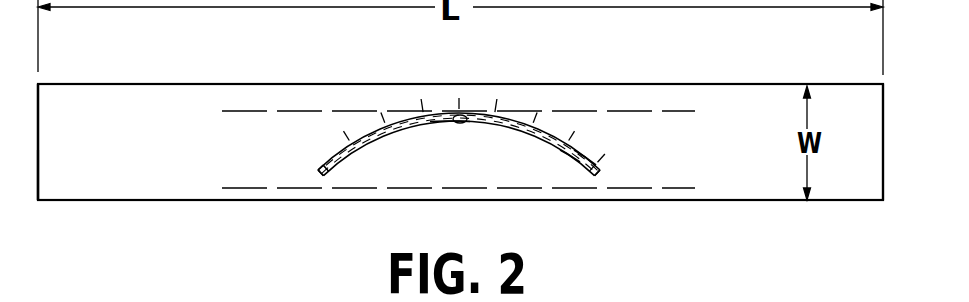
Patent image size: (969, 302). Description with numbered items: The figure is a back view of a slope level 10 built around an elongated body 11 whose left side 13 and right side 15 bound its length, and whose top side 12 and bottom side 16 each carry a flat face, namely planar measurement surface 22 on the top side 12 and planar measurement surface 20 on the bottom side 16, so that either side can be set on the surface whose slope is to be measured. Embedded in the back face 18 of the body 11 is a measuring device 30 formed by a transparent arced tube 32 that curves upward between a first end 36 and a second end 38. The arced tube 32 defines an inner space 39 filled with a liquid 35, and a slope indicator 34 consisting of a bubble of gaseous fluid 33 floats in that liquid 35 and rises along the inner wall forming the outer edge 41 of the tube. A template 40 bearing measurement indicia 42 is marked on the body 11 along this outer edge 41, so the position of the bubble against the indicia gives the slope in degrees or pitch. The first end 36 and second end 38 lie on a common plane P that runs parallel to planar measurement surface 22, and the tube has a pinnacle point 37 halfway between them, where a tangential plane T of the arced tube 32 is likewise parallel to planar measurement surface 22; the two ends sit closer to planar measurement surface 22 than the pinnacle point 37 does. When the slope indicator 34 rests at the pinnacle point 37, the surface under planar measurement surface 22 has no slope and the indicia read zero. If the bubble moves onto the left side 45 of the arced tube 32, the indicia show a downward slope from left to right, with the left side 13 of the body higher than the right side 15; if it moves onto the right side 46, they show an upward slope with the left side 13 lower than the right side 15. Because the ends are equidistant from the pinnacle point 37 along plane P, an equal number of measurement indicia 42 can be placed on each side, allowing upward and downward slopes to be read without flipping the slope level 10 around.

The slope level 10 is at (28, 165).
The body 11 is at (857, 97).
The top side 12 is at (785, 201).
The left side 13 is at (38, 123).
The right side 15 is at (883, 165).
The bottom side 16 is at (683, 85).
The back face 18 is at (60, 168).
The planar measurement surface 20 is at (182, 85).
The planar measurement surface 22 is at (152, 202).
The measuring device 30 is at (347, 172).
The transparent arced tube 32 is at (557, 142).
The bubble of gaseous fluid 33 is at (447, 122).
The slope indicator 34 is at (455, 123).
The liquid 35 is at (576, 155).
The first end 36 is at (322, 183).
The pinnacle point 37 is at (462, 116).
The second end 38 is at (596, 190).
The inner space 39 is at (415, 126).
The template 40 is at (427, 97).
The outer edge 41 is at (585, 156).
The measurement indicia 42 is at (323, 158).
The left side 45 is at (320, 178).
The right side 46 is at (568, 143).
The tangential plane T is at (710, 112).
The plane P is at (735, 188).